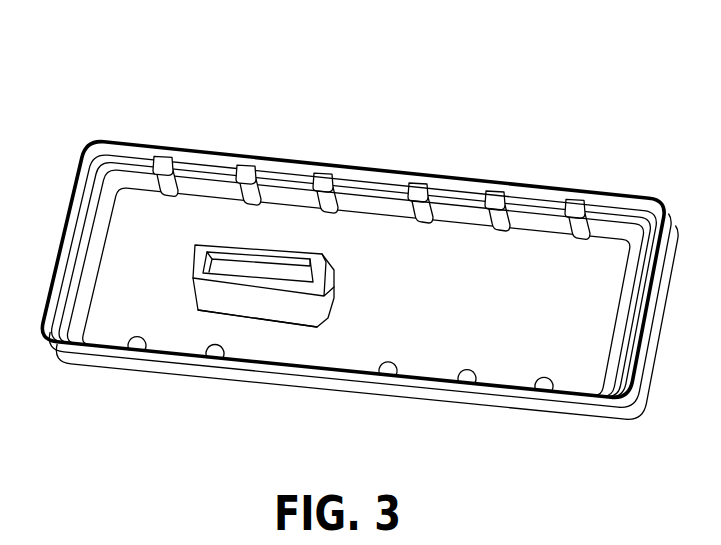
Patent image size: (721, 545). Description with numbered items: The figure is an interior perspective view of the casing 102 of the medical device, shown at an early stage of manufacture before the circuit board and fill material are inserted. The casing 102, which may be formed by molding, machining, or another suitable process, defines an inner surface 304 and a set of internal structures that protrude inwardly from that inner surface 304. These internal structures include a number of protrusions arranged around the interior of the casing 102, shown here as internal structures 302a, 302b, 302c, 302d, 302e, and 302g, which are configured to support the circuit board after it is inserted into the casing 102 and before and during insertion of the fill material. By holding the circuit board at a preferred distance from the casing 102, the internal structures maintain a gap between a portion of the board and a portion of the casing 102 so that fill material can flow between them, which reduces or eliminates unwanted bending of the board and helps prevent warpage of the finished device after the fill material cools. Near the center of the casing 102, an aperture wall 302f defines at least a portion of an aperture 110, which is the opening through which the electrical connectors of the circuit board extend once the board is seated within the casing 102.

The casing 102 is at (525, 93).
The inner surface 304 is at (551, 192).
The internal structure 302a is at (82, 223).
The internal structure 302b is at (167, 158).
The internal structure 302c is at (201, 175).
The internal structure 302d is at (253, 172).
The internal structure 302e is at (543, 391).
The aperture wall 302f is at (252, 297).
The internal structure 302g is at (204, 352).
The aperture 110 is at (258, 275).